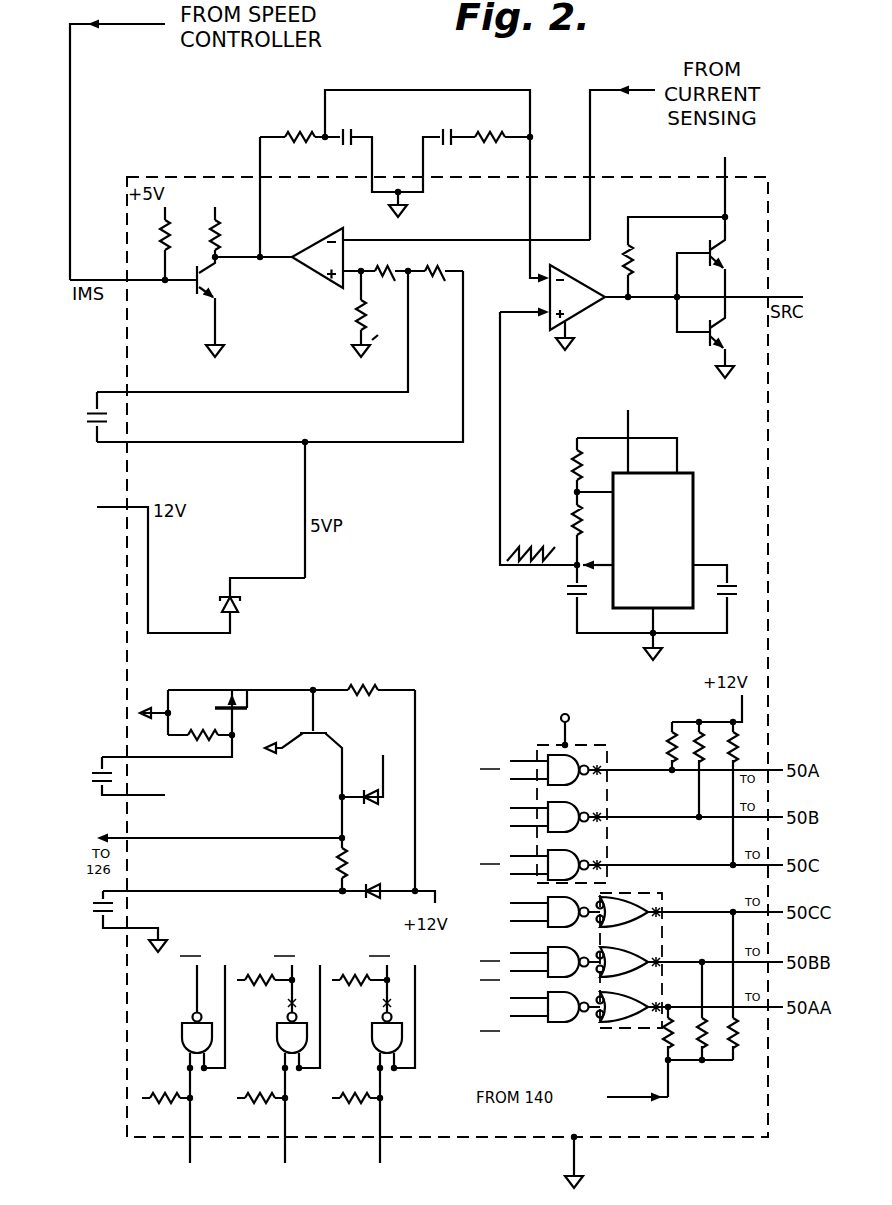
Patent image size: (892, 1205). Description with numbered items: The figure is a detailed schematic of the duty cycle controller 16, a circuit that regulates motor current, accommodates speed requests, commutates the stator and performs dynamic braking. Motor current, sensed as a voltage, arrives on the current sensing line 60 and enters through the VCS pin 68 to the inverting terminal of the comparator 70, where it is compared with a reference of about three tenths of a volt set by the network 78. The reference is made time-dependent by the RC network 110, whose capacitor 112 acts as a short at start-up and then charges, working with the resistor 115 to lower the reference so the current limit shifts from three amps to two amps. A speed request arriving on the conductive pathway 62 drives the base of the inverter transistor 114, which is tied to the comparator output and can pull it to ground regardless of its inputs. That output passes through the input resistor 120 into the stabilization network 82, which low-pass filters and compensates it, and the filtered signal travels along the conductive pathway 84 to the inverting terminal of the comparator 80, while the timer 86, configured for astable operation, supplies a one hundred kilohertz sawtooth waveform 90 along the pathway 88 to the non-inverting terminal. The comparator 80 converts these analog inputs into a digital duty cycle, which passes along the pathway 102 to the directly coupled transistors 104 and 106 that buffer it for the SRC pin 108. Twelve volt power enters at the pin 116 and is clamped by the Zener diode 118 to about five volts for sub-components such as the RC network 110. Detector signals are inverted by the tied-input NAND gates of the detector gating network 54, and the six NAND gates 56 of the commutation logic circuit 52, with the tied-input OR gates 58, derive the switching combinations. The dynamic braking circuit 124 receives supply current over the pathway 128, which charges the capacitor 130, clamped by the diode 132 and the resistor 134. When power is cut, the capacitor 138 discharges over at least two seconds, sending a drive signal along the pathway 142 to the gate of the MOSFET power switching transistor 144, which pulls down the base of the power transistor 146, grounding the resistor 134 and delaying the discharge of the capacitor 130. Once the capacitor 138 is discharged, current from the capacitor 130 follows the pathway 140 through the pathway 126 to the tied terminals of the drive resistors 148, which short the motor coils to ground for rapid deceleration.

The duty cycle controller 16 is at (753, 173).
The commutation logic circuit 52 is at (753, 742).
The detector gating network 54 is at (172, 1032).
The NAND gates 56 is at (580, 812).
The OR gates 58 is at (650, 895).
The current sensing input line 60 is at (606, 88).
The conductive pathway 62 is at (136, 26).
The VCS pin 68 is at (592, 177).
The comparator 70 is at (318, 243).
The reference network 78 is at (382, 286).
The comparator 80 is at (548, 328).
The stabilization network 82 is at (427, 153).
The conductive pathway 84 is at (530, 177).
The timer 86 is at (638, 540).
The conductive pathway 88 is at (502, 495).
The sawtooth waveform 90 is at (532, 566).
The conductive pathway 102 is at (642, 298).
The transistor 104 is at (700, 246).
The transistor 106 is at (708, 346).
The SRC pin 108 is at (768, 296).
The RC network 110 is at (397, 450).
The capacitor 112 is at (85, 416).
The inverter transistor 114 is at (198, 291).
The resistor 115 is at (447, 268).
The pin 116 is at (122, 508).
The Zener diode 118 is at (226, 590).
The resistor 120 is at (322, 134).
The dynamic braking circuit 124 is at (428, 726).
The conductive pathway 126 is at (634, 1098).
The conductive pathway 128 is at (438, 890).
The capacitor 130 is at (90, 912).
The diode 132 is at (372, 886).
The resistor 134 is at (331, 868).
The capacitor 138 is at (86, 774).
The conductive pathway 140 is at (272, 838).
The conductive pathway 142 is at (160, 759).
The MOSFET power switching transistor 144 is at (225, 688).
The power transistor 146 is at (320, 733).
The drive resistors 148 is at (737, 1049).